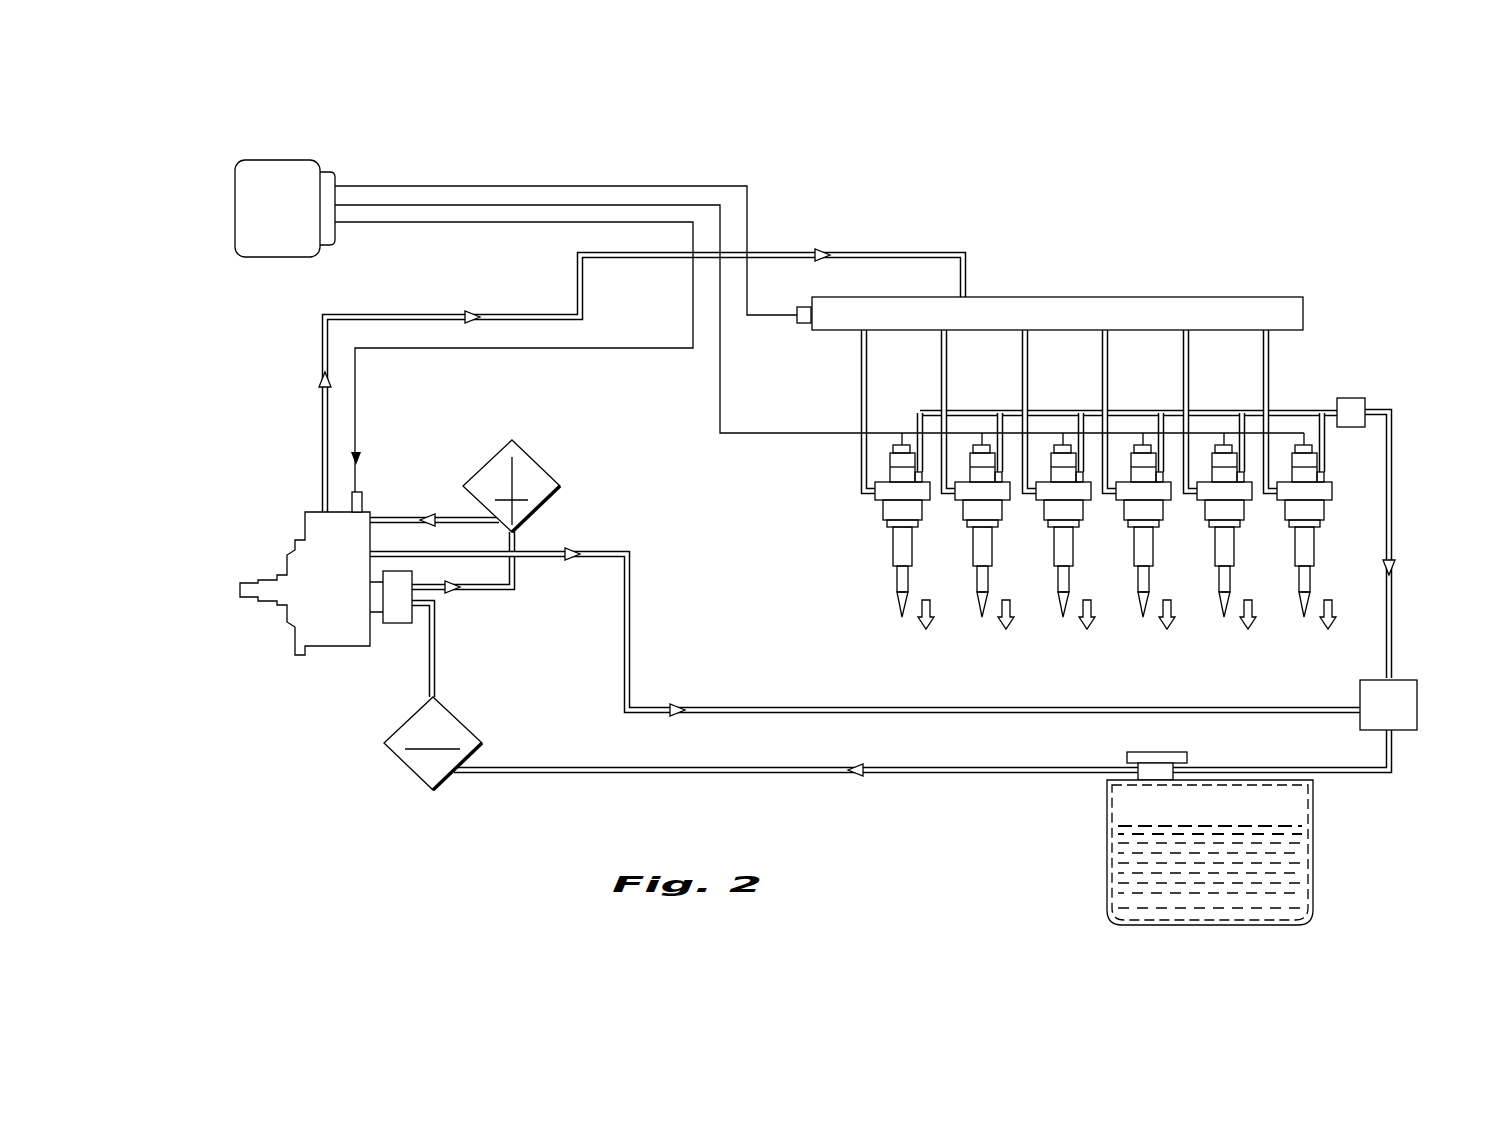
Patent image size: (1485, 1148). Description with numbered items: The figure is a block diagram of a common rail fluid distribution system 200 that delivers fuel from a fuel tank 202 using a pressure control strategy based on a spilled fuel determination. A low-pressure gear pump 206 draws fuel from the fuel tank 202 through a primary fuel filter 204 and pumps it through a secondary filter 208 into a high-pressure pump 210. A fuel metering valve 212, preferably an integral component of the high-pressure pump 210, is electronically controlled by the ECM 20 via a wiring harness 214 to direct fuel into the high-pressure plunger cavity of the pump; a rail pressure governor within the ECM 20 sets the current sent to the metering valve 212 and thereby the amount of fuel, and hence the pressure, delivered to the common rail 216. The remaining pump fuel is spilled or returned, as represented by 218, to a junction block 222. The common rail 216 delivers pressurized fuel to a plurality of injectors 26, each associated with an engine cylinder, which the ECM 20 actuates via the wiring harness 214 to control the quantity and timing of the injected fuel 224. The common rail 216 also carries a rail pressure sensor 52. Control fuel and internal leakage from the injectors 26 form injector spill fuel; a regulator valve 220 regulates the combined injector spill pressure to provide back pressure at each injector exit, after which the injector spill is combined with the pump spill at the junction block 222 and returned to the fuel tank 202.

The ECM 20 is at (233, 208).
The common rail fluid distribution system 200 is at (915, 162).
The wiring harness 214 is at (640, 186).
The common rail 216 is at (1110, 297).
The rail pressure sensor 52 is at (803, 323).
The regulator valve 220 is at (1350, 398).
The junction block 222 is at (1398, 680).
The injectors 26 is at (870, 547).
The injected fuel 224 is at (938, 630).
The secondary filter 208 is at (530, 455).
The fuel metering valve 212 is at (352, 497).
The high-pressure pump 210 is at (290, 558).
The low-pressure gear pump 206 is at (398, 623).
The spilled fuel 218 is at (588, 568).
The primary fuel filter 204 is at (455, 712).
The fuel tank 202 is at (1108, 885).